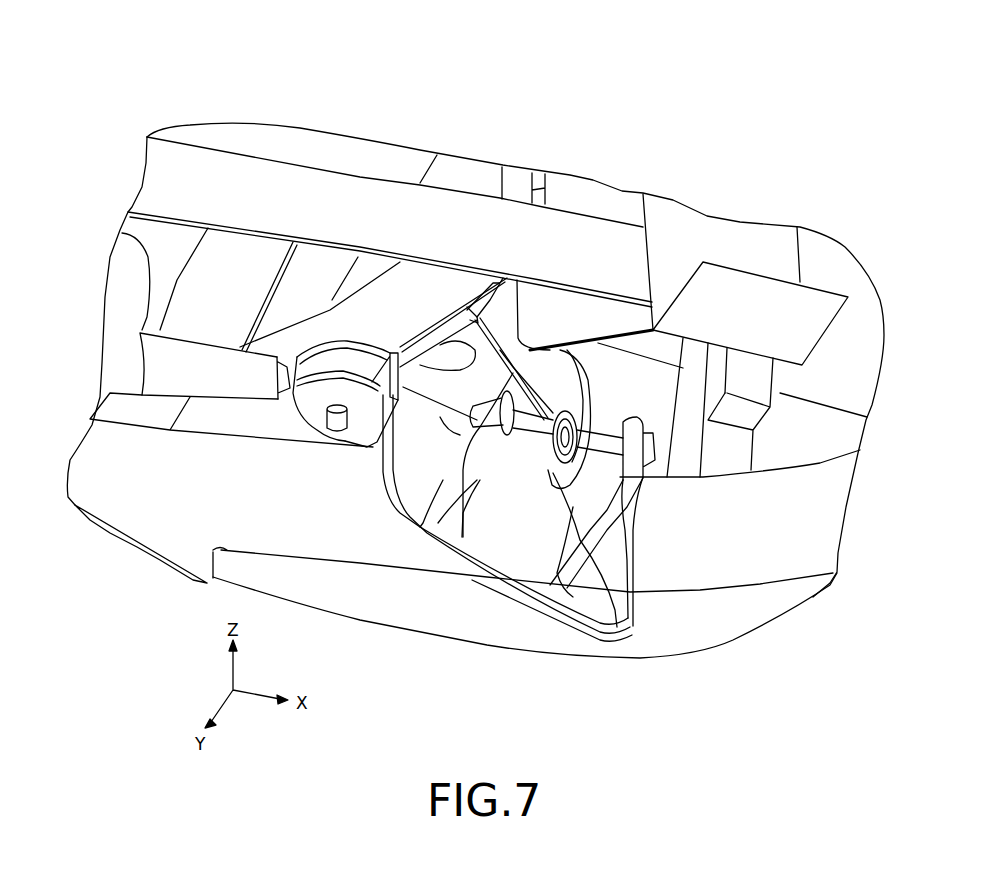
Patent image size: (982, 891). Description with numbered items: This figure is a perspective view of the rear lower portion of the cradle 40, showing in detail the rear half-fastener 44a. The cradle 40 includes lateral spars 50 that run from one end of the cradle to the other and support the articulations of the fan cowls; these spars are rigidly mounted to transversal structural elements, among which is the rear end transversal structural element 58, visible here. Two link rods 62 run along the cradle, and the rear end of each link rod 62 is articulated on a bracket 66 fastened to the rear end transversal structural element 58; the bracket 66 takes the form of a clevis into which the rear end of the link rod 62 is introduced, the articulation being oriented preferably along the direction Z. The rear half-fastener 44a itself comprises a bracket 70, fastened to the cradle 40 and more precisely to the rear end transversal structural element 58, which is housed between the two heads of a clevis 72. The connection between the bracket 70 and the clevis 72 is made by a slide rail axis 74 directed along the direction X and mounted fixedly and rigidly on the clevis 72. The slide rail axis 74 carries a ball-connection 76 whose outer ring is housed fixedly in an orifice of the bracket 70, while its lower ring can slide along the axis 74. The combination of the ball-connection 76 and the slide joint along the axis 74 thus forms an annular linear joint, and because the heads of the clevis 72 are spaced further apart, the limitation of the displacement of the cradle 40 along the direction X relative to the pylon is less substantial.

The cradle 40 is at (512, 120).
The rear half-fastener 44a is at (649, 380).
The lateral spar 50 is at (193, 160).
The rear end transversal structural element 58 is at (712, 240).
The link rod 62 is at (172, 350).
The bracket 66 is at (377, 403).
The bracket 70 is at (558, 412).
The clevis 72 is at (420, 527).
The slide rail axis 74 is at (532, 417).
The ball-connection 76 is at (615, 627).